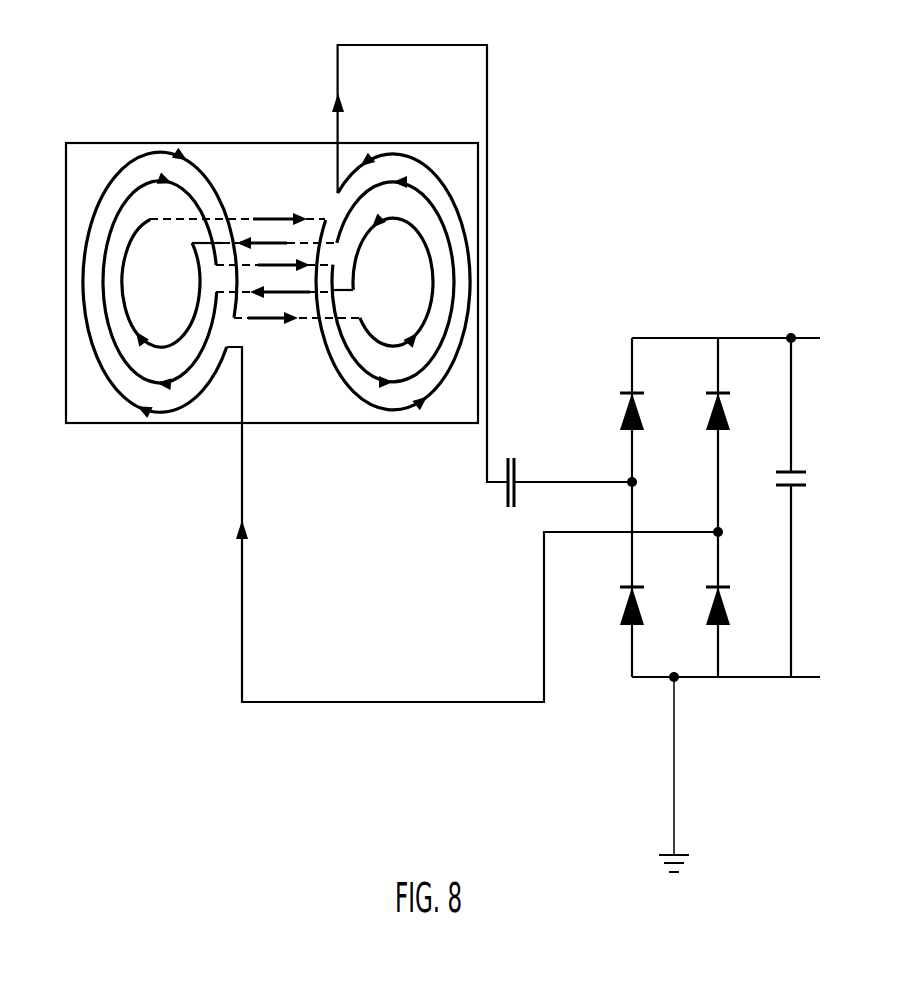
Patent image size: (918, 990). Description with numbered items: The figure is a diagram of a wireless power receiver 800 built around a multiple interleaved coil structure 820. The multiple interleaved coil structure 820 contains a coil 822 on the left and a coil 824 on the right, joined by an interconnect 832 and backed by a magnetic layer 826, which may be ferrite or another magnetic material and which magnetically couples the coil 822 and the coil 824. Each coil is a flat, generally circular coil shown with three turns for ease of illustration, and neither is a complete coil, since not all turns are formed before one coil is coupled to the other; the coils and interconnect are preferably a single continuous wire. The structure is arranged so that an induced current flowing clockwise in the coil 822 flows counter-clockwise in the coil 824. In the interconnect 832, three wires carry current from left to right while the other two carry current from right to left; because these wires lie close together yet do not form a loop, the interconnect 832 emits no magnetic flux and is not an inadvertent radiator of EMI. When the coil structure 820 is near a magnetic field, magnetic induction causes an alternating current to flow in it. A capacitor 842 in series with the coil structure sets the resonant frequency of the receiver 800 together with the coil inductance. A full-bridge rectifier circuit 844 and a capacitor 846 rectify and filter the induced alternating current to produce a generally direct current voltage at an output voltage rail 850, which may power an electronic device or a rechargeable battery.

The wireless power receiver 800 is at (278, 783).
The multiple interleaved coil structure 820 is at (252, 311).
The coil 822 is at (100, 196).
The coil 824 is at (385, 414).
The magnetic layer 826 is at (184, 428).
The interconnect 832 is at (268, 176).
The capacitor 842 is at (514, 470).
The full-bridge rectifier circuit 844 is at (597, 390).
The capacitor 846 is at (796, 466).
The output voltage rail 850 is at (790, 333).